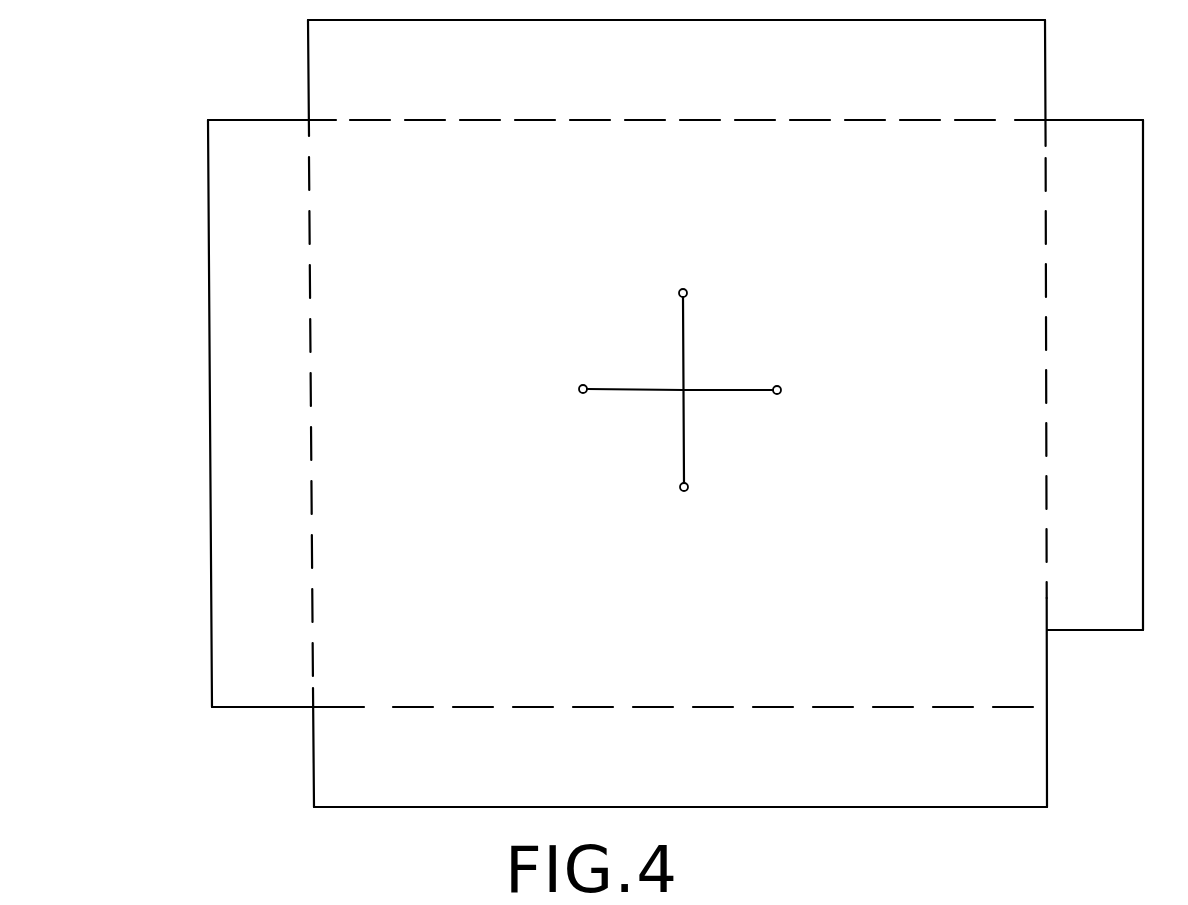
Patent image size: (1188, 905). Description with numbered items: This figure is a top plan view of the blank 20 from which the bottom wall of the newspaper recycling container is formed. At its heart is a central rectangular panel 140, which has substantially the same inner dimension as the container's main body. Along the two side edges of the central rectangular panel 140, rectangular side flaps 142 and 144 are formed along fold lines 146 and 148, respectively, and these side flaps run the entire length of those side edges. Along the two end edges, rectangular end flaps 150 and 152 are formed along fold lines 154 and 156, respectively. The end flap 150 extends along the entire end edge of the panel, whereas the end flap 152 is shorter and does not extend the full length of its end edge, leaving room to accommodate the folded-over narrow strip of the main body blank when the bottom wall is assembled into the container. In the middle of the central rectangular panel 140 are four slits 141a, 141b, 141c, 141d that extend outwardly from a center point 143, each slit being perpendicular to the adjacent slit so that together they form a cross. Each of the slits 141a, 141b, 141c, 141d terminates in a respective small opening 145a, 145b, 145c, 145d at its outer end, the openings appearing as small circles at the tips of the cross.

The blank 20 is at (1100, 75).
The central rectangular panel 140 is at (891, 186).
The slit 141a is at (693, 446).
The slit 141b is at (634, 402).
The slit 141c is at (677, 341).
The slit 141d is at (712, 397).
The rectangular side flap 142 is at (318, 70).
The center point 143 is at (687, 386).
The rectangular side flap 144 is at (364, 792).
The small opening 145a is at (683, 494).
The small opening 145b is at (578, 397).
The small opening 145c is at (689, 289).
The small opening 145d is at (778, 380).
The fold line 146 is at (427, 119).
The fold line 148 is at (411, 707).
The rectangular end flap 150 is at (257, 695).
The rectangular end flap 152 is at (1100, 612).
The fold line 154 is at (311, 395).
The fold line 156 is at (1046, 512).